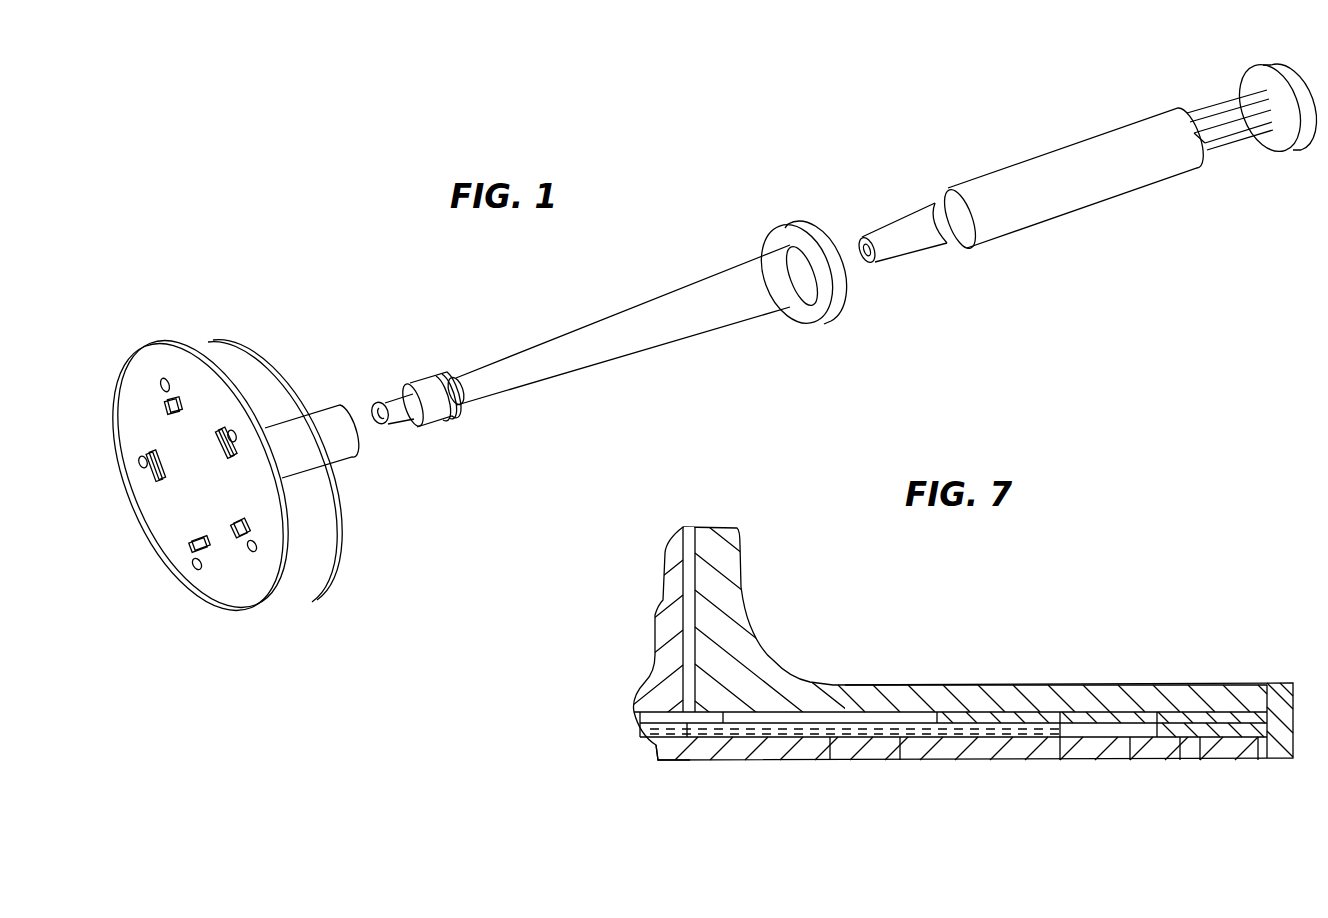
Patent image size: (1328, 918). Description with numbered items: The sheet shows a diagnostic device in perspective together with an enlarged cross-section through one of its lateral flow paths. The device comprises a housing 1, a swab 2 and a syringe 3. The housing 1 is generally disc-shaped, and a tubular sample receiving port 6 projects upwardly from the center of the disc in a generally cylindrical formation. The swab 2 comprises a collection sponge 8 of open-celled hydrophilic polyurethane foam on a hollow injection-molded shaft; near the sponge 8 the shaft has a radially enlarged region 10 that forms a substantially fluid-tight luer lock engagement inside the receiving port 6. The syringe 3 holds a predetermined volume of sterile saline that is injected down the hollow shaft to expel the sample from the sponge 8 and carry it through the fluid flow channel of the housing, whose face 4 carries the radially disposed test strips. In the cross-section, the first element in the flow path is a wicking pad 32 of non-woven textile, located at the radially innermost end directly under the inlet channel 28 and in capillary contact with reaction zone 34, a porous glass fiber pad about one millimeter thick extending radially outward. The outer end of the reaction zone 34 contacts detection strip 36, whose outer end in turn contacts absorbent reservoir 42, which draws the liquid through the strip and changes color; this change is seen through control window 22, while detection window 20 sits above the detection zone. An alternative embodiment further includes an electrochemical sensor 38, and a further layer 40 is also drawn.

In FIG. 1, the housing 1 is at (218, 447).
In FIG. 1, the swab 2 is at (663, 288).
In FIG. 1, the syringe 3 is at (1127, 212).
In FIG. 1, the disc / membrane support 4 is at (222, 580).
In FIG. 1, the tubular sample receiving port 6 is at (308, 428).
In FIG. 1, the collection sponge 8 is at (403, 420).
In FIG. 1, the radially enlarged region 10 is at (433, 382).
In FIG. 7, the detection window 20 is at (1097, 760).
In FIG. 7, the control window 22 is at (1222, 750).
In FIG. 7, the inlet channel 28 is at (657, 628).
In FIG. 7, the wicking pad 32 is at (640, 707).
In FIG. 7, the reaction zone 34 is at (660, 793).
In FIG. 7, the detection strip 36 is at (902, 713).
In FIG. 7, the electrochemical sensor 38 is at (992, 713).
In FIG. 7, the layer 40 is at (1095, 713).
In FIG. 7, the absorbent reservoir 42 is at (1208, 730).